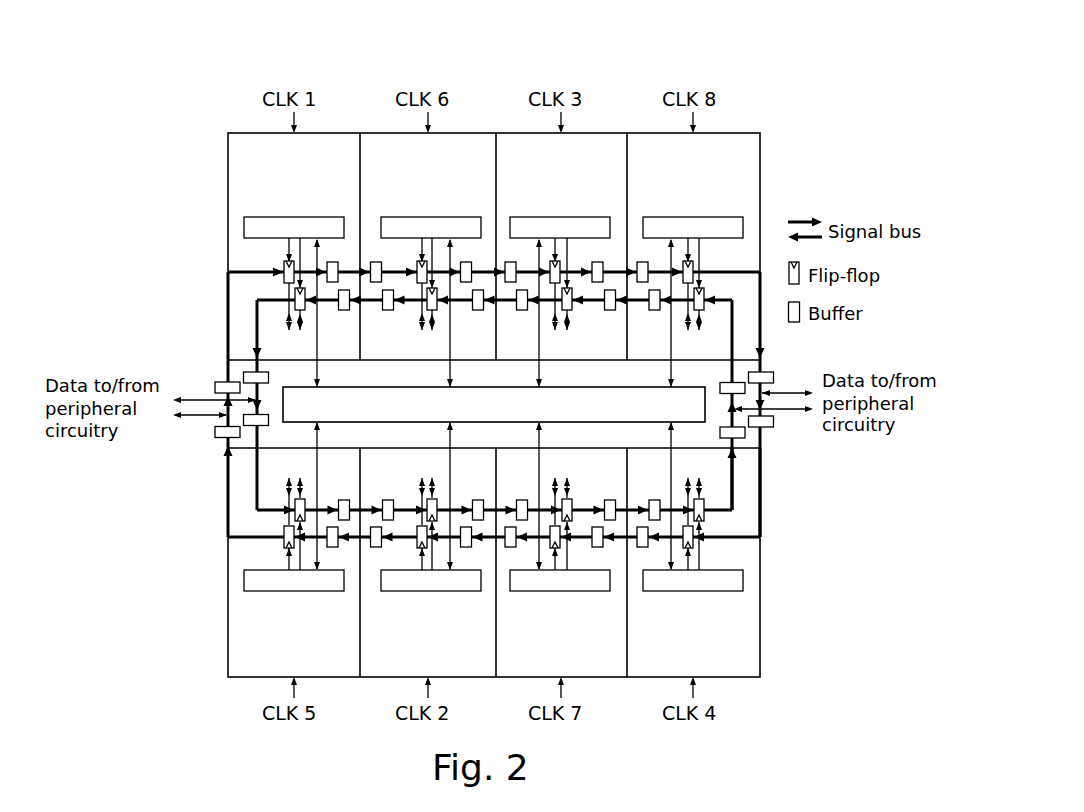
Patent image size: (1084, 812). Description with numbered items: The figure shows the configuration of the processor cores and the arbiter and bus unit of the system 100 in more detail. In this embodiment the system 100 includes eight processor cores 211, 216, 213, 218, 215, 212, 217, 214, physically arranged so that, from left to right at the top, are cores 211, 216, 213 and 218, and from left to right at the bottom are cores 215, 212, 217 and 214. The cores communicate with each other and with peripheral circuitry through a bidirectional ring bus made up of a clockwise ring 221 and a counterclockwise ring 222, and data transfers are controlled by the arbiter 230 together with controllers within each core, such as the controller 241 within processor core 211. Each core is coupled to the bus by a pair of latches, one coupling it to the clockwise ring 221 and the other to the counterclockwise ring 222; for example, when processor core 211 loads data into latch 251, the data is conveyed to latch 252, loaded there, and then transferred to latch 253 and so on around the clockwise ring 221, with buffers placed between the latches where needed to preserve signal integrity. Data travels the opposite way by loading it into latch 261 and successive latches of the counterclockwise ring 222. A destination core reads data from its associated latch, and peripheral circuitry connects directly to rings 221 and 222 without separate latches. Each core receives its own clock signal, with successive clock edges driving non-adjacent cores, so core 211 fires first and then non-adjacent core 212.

The system 100 is at (814, 100).
The processor core 211 is at (261, 266).
The processor core 216 is at (427, 266).
The processor core 213 is at (560, 266).
The processor core 218 is at (690, 266).
The processor core 215 is at (297, 540).
The processor core 212 is at (427, 540).
The processor core 217 is at (560, 540).
The processor core 214 is at (690, 540).
The controller 241 is at (288, 217).
The latch 251 is at (284, 264).
The latch 252 is at (417, 268).
The latch 253 is at (550, 268).
The latch 261 is at (295, 296).
The arbiter 230 is at (494, 404).
The clockwise ring 221 is at (763, 475).
The counterclockwise ring 222 is at (762, 512).